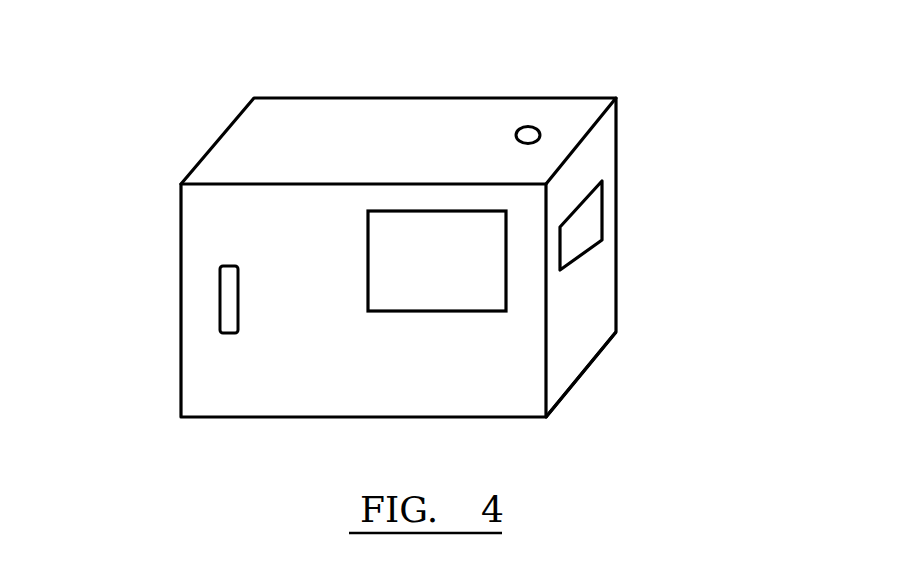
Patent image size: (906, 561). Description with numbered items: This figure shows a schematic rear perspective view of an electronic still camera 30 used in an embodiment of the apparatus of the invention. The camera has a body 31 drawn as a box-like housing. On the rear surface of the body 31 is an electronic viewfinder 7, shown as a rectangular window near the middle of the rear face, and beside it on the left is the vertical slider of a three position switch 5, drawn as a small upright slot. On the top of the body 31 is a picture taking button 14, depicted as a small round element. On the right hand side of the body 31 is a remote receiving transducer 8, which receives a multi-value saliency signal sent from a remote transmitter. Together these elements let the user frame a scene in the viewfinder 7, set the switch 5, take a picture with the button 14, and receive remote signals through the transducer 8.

The electronic still camera 30 is at (628, 145).
The body 31 is at (582, 337).
The picture taking button 14 is at (528, 126).
The electronic viewfinder 7 is at (447, 273).
The remote receiving transducer 8 is at (587, 224).
The three position switch 5 is at (230, 303).